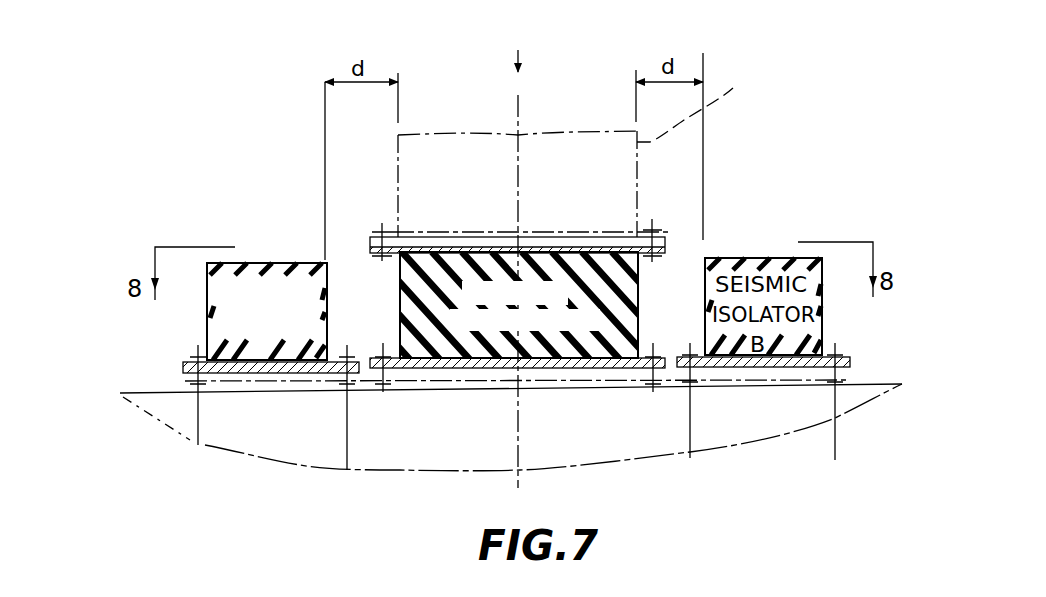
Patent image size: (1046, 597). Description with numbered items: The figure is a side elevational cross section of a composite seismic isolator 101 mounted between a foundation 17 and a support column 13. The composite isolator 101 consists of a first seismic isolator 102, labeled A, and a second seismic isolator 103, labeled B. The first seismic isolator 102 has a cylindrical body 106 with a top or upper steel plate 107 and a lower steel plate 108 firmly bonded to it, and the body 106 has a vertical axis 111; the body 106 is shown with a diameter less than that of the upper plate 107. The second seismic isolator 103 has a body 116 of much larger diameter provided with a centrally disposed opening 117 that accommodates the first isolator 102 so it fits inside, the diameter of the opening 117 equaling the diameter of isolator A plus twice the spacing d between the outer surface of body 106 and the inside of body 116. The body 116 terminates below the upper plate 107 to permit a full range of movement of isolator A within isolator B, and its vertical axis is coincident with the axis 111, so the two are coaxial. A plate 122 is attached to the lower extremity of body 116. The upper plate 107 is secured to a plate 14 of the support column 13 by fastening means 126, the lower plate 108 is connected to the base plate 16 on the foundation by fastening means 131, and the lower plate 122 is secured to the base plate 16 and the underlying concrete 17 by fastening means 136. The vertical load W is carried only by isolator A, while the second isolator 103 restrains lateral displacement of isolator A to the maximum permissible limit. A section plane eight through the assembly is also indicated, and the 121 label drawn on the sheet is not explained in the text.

The composite seismic isolator 101 is at (195, 168).
The first seismic isolator 102 is at (395, 283).
The second seismic isolator 103 is at (227, 281).
The body 106 is at (428, 262).
The upper steel plate 107 is at (552, 247).
The lower steel plate 108 is at (410, 370).
The vertical axis 111 is at (515, 128).
The support column 13 is at (573, 147).
The plate 14 is at (666, 244).
The base plate 16 is at (187, 381).
The foundation 17 is at (582, 437).
The body 116 is at (208, 321).
The centrally disposed opening 117 is at (328, 280).
The top of isolator B 121 is at (262, 262).
The plate 122 is at (248, 370).
The fastening means 126 is at (660, 226).
The fastening means 131 is at (660, 352).
The fastening means 136 is at (198, 405).